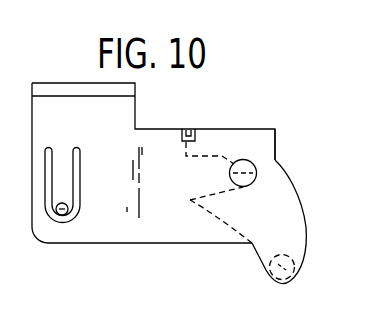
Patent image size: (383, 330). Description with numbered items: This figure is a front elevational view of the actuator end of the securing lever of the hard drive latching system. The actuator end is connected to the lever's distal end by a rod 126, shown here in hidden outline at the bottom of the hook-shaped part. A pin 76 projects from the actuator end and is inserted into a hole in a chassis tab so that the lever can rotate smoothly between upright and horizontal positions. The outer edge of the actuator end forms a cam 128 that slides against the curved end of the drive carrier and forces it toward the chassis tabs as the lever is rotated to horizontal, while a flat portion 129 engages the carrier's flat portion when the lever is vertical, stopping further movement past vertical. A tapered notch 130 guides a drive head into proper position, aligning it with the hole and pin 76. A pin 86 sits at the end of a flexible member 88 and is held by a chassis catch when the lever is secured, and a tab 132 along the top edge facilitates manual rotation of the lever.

The tab 132 is at (48, 90).
The flexible member 88 is at (63, 178).
The pin 86 is at (61, 216).
The tapered notch 130 is at (222, 156).
The flat portion 129 is at (276, 141).
The pin 76 is at (252, 169).
The cam 128 is at (305, 229).
The rod 126 is at (294, 270).